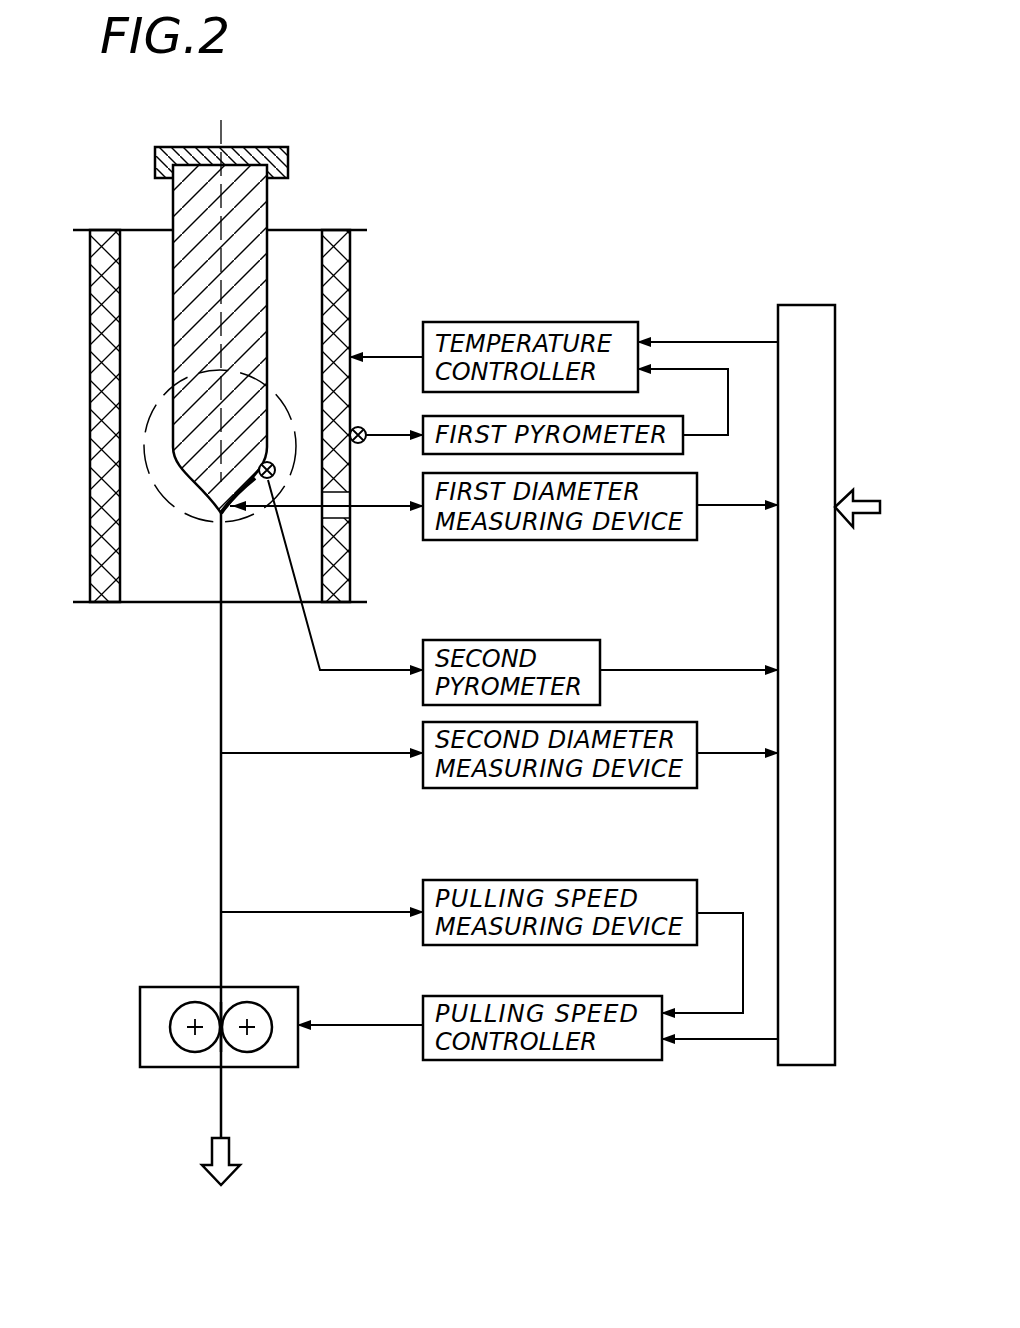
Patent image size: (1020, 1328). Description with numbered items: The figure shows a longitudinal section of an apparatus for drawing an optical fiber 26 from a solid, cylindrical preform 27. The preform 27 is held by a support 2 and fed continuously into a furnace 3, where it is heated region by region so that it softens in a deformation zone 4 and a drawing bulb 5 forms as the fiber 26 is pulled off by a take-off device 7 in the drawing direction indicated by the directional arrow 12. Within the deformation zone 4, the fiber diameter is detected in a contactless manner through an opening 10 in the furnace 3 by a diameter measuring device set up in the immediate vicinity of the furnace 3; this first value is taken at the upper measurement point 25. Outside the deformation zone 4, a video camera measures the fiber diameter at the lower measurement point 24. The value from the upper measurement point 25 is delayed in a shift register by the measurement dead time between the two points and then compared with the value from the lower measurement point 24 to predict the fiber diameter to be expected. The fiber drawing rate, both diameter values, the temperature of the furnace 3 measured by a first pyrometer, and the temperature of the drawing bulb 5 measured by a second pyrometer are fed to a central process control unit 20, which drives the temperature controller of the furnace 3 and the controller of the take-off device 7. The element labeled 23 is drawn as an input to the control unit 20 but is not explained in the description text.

The support 2 is at (185, 155).
The preform 27 is at (198, 217).
The furnace 3 is at (350, 297).
The drawing bulb 5 is at (153, 483).
The deformation zone 4 is at (187, 518).
The upper measurement point 25 is at (225, 516).
The opening 10 is at (350, 515).
The lower measurement point 24 is at (215, 751).
The optical fiber 26 is at (221, 842).
The take-off device 7 is at (160, 998).
The directional arrow 12 is at (217, 1157).
The central process control unit 20 is at (802, 312).
The input of set values 23 is at (862, 507).